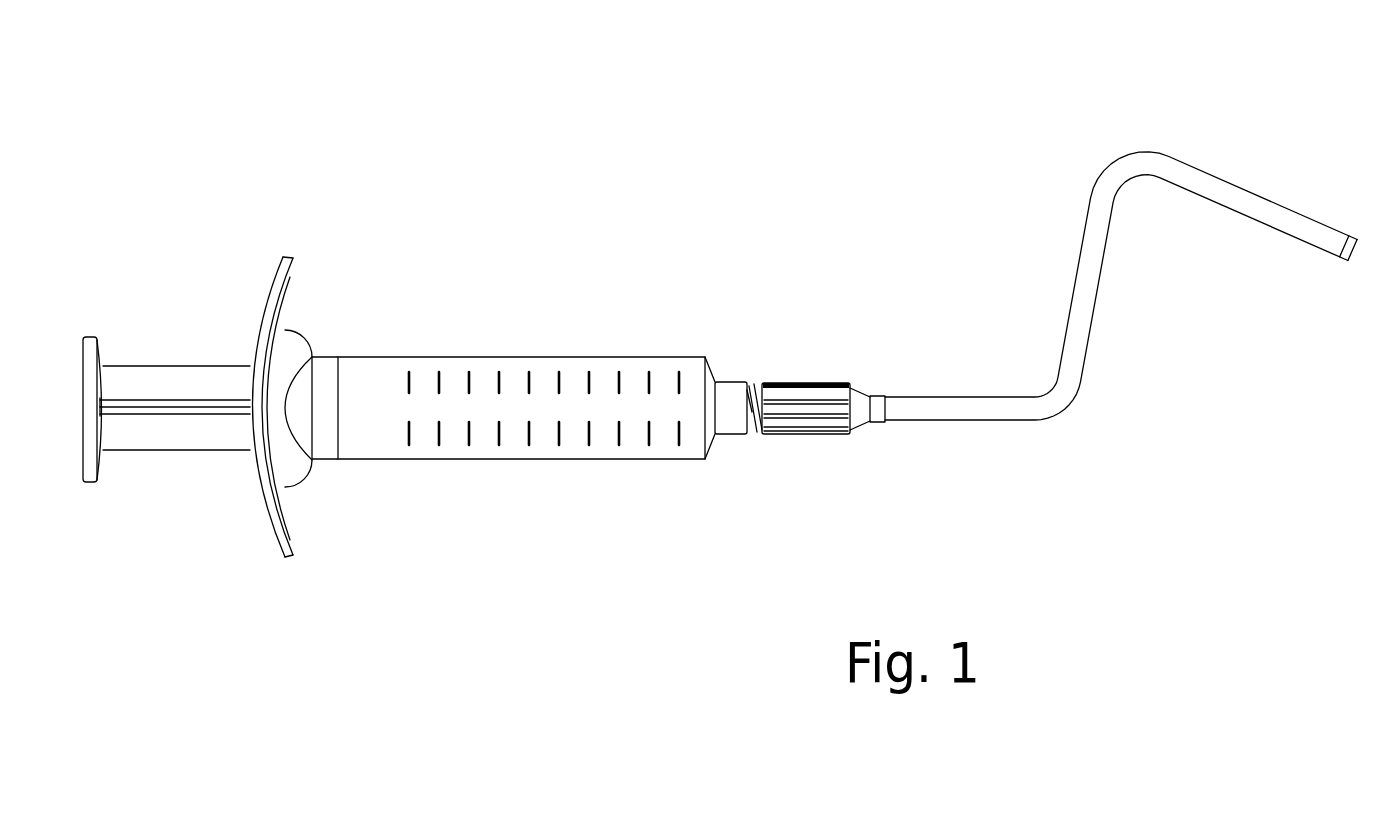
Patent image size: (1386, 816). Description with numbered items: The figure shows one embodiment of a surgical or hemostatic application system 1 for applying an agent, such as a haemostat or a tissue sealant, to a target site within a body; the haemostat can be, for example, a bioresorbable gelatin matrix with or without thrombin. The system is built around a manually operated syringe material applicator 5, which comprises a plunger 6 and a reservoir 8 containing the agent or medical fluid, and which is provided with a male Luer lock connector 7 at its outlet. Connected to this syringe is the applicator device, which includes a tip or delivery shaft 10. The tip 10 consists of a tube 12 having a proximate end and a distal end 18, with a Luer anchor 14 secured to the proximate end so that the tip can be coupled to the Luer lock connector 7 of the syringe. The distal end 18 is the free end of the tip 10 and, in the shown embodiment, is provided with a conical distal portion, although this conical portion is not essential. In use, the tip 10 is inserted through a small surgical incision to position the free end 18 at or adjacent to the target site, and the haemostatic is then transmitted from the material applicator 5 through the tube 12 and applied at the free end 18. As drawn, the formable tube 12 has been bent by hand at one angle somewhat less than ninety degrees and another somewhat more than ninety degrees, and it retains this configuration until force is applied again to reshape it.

The system 1 is at (655, 137).
The syringe material applicator 5 is at (452, 500).
The plunger 6 is at (157, 380).
The male Luer lock connector 7 is at (733, 380).
The reservoir 8 is at (542, 360).
The tip 10 is at (1062, 180).
The tube 12 is at (1093, 308).
The Luer anchor 14 is at (828, 383).
The distal end 18 is at (1355, 240).